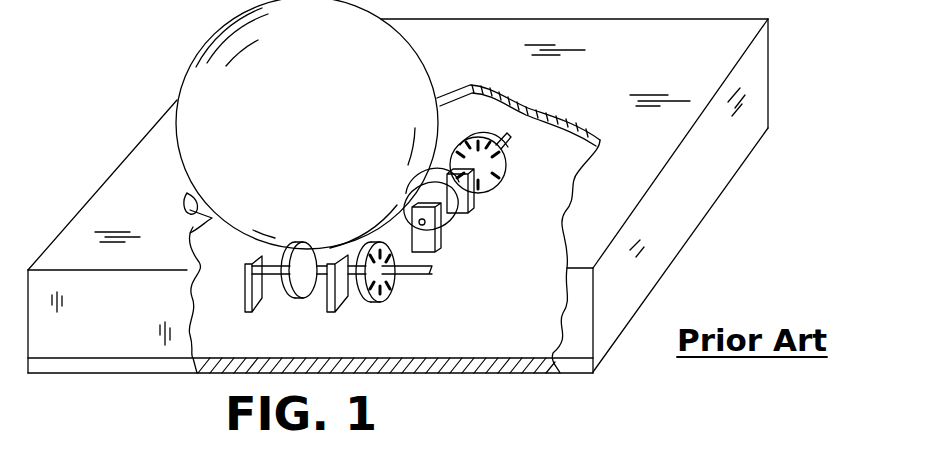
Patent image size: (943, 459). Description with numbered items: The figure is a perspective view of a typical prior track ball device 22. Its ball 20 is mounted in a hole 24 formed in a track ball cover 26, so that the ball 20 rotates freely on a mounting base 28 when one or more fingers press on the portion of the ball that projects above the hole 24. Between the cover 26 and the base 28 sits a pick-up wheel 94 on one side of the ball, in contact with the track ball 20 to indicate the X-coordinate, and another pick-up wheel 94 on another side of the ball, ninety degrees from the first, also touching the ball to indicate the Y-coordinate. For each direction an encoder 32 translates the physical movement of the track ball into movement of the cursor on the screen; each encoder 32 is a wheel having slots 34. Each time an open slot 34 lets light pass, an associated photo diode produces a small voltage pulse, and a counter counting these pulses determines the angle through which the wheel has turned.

The ball 20 is at (412, 63).
The prior track ball device 22 is at (797, 57).
The hole 24 is at (188, 204).
The track ball cover 26 is at (697, 186).
The mounting base 28 is at (479, 373).
The encoder 32 is at (503, 178).
The slots 34 is at (480, 187).
The pick-up wheel 94 is at (304, 298).